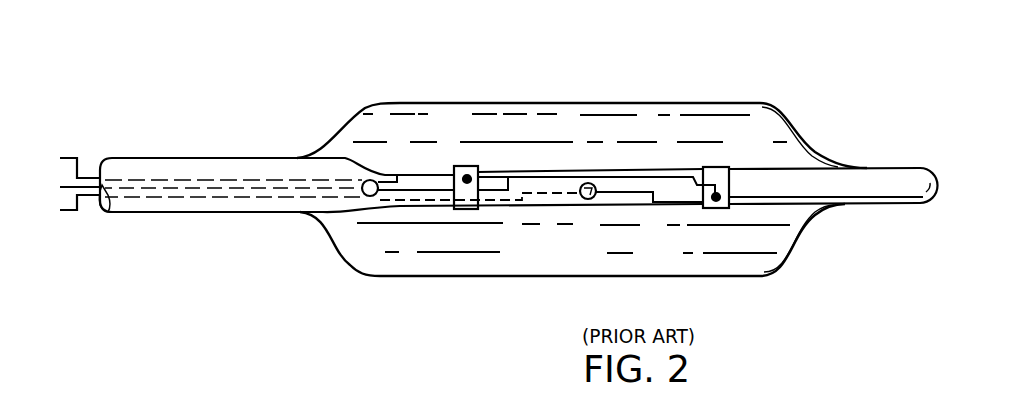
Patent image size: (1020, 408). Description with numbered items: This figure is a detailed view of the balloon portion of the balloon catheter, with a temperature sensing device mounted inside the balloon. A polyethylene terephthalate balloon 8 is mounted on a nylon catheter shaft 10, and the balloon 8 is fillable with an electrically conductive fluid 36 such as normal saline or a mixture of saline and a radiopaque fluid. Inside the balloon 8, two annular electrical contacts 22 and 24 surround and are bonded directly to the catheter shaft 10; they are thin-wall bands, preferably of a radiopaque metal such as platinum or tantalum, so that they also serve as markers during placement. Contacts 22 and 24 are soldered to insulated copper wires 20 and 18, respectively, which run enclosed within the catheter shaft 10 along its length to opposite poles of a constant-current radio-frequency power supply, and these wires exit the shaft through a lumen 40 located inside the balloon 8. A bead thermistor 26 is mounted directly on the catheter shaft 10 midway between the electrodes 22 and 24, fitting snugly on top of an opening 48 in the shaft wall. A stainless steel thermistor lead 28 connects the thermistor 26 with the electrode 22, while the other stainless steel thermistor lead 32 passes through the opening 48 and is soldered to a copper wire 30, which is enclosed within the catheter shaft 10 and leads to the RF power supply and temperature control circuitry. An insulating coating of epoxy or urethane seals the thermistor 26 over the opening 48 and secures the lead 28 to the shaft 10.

The balloon 8 is at (493, 277).
The catheter shaft 10 is at (893, 207).
The copper wire 18 is at (413, 172).
The copper wire 20 is at (645, 170).
The annular electrical contact 22 is at (727, 167).
The annular electrical contact 24 is at (458, 168).
The bead thermistor 26 is at (593, 185).
The thermistor lead 28 is at (653, 192).
The copper wire 30 is at (522, 200).
The thermistor lead 32 is at (553, 192).
The electrically conductive fluid 36 is at (377, 248).
The lumen 40 is at (362, 181).
The opening 48 is at (592, 199).